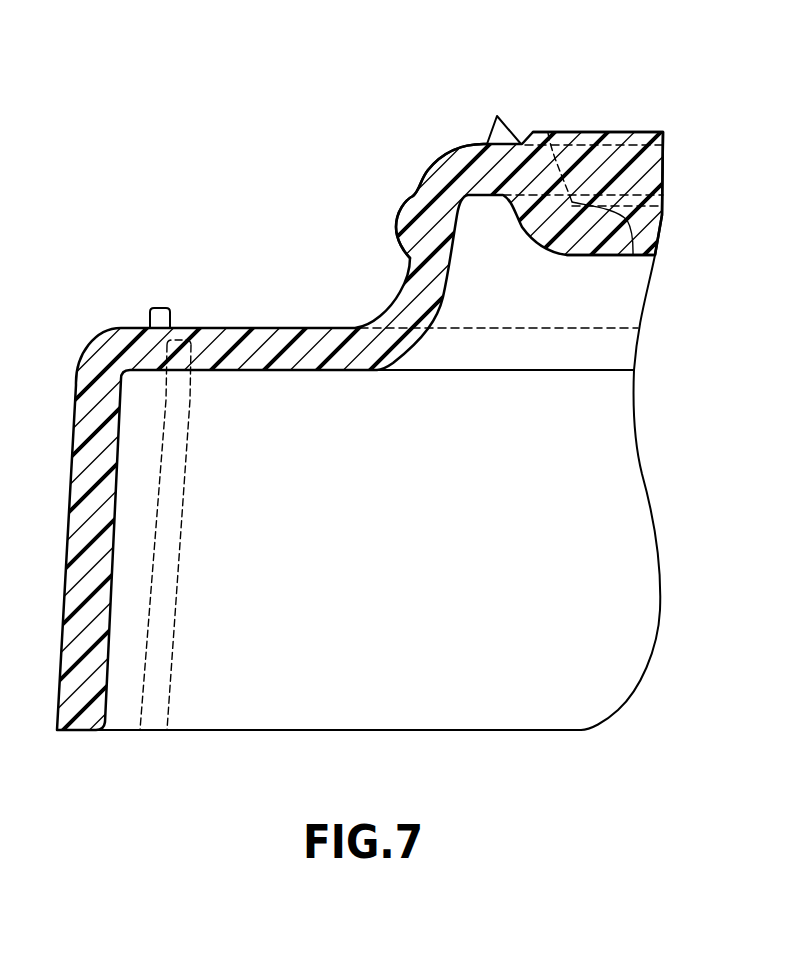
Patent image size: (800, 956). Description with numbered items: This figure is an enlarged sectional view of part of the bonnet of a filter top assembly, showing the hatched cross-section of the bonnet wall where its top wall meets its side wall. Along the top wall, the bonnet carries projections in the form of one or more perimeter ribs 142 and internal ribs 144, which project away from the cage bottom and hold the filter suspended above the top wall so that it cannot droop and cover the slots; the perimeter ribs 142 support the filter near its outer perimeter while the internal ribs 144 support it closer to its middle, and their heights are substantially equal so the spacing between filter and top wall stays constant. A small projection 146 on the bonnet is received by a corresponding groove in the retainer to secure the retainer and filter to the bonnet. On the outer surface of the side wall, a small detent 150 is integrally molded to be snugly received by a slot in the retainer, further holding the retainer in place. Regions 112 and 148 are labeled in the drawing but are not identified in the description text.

The cap body shoulder 112 is at (438, 175).
The perimeter ribs 142 is at (490, 134).
The internal ribs 144 is at (650, 161).
The projections 146 is at (496, 121).
The bead 148 is at (400, 224).
The detents 150 is at (159, 318).